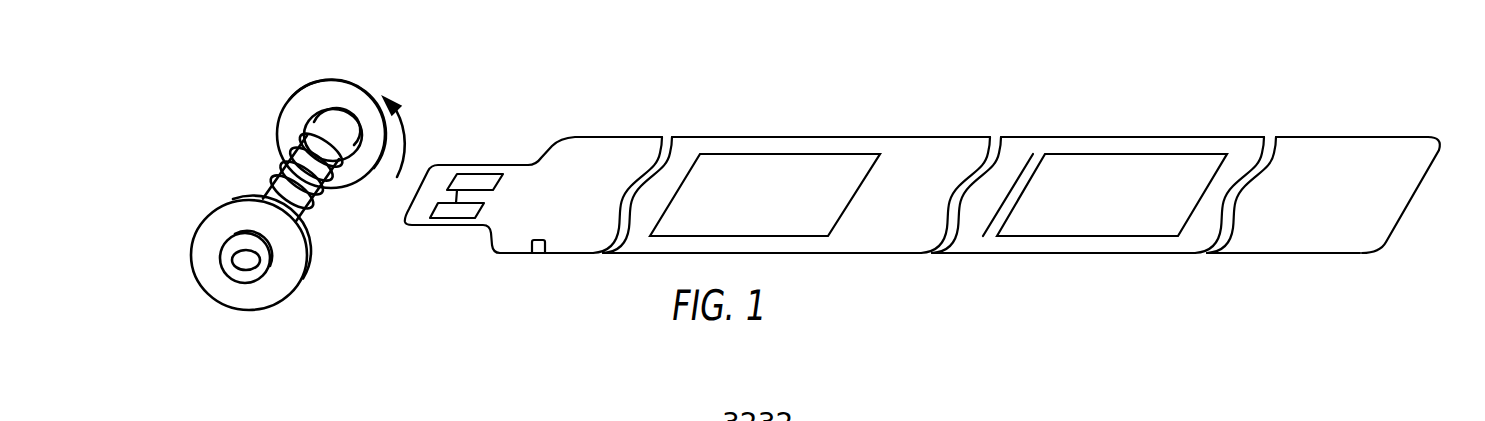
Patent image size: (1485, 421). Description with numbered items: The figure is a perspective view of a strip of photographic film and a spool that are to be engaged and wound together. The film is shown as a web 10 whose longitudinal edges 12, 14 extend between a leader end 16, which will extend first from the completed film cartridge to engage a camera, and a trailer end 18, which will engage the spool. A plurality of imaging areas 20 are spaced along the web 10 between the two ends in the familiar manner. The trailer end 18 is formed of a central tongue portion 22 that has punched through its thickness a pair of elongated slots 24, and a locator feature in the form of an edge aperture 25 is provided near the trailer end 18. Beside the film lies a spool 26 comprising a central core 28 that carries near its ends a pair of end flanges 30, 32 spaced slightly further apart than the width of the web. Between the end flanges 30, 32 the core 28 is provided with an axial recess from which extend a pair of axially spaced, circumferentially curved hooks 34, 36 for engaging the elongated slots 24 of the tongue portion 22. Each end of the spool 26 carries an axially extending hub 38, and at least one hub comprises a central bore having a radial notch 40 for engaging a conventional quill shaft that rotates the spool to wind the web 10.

The web 10 is at (1292, 243).
The longitudinal edge 12 is at (938, 137).
The longitudinal edge 14 is at (900, 255).
The leader end 16 is at (1423, 183).
The trailer end 18 is at (406, 203).
The imaging areas 20 is at (774, 212).
The central tongue portion 22 is at (435, 186).
The elongated slots 24 is at (468, 172).
The edge aperture 25 is at (545, 243).
The spool 26 is at (306, 186).
The central core 28 is at (290, 172).
The end flange 30 is at (354, 100).
The end flange 32 is at (200, 237).
The hook 34 is at (290, 150).
The hook 36 is at (275, 184).
The hub 38 is at (272, 266).
The radial notch 40 is at (228, 262).